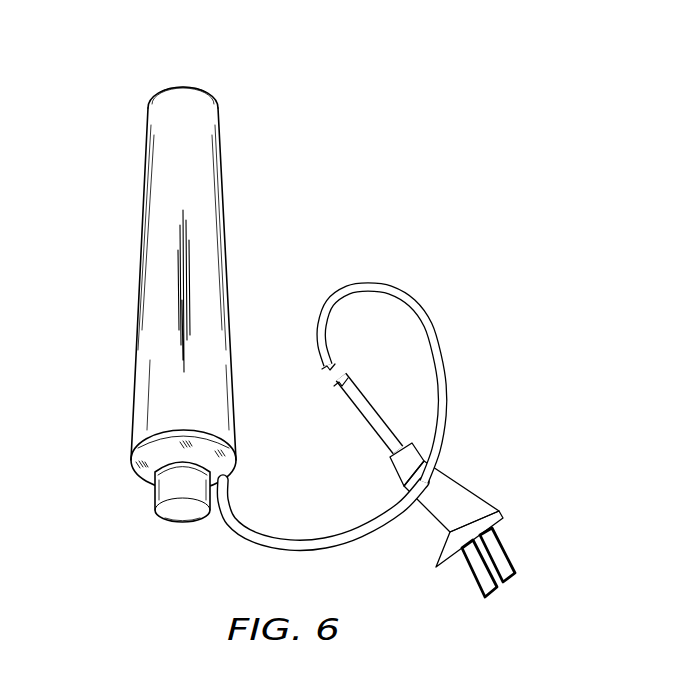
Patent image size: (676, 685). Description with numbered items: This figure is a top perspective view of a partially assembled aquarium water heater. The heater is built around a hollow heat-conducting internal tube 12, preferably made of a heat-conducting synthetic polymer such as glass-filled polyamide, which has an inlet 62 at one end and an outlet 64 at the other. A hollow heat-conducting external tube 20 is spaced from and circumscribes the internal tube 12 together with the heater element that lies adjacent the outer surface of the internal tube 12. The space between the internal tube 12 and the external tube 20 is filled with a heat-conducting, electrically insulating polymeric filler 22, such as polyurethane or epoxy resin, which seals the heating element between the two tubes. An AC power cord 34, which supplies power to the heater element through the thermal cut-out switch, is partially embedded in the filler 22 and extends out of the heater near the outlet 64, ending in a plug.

The hollow heat-conducting internal tube 12 is at (157, 497).
The hollow heat-conducting external tube 20 is at (210, 115).
The polymeric filler 22 is at (140, 466).
The AC power cord 34 is at (445, 389).
The inlet 62 is at (185, 86).
The outlet 64 is at (181, 524).